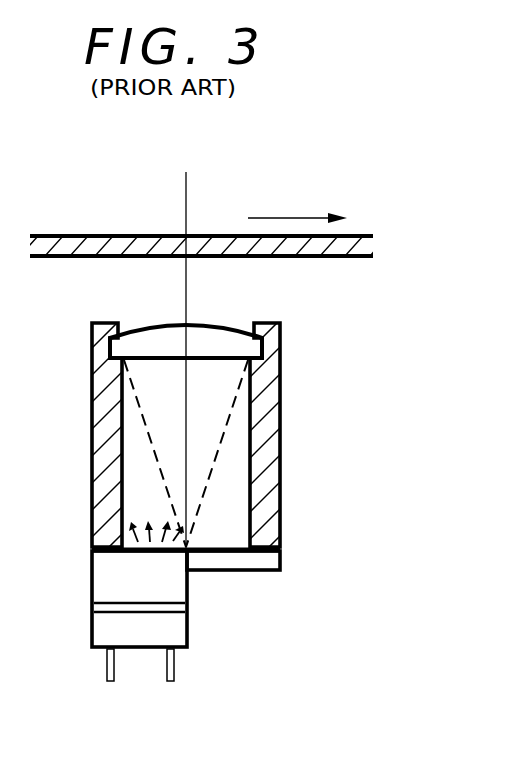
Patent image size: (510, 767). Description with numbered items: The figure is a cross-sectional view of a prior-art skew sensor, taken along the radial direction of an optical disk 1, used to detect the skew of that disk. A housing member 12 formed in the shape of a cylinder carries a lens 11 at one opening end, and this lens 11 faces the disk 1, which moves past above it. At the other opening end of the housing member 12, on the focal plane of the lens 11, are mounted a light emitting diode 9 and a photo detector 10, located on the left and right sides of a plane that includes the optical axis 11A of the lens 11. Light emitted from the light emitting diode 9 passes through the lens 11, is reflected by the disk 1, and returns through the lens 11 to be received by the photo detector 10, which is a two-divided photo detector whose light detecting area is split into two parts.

The optical disk 1 is at (62, 258).
The light emitting diode 9 is at (93, 582).
The photo detector 10 is at (241, 572).
The lens 11 is at (222, 340).
The optical axis 11A is at (185, 295).
The housing member 12 is at (281, 476).